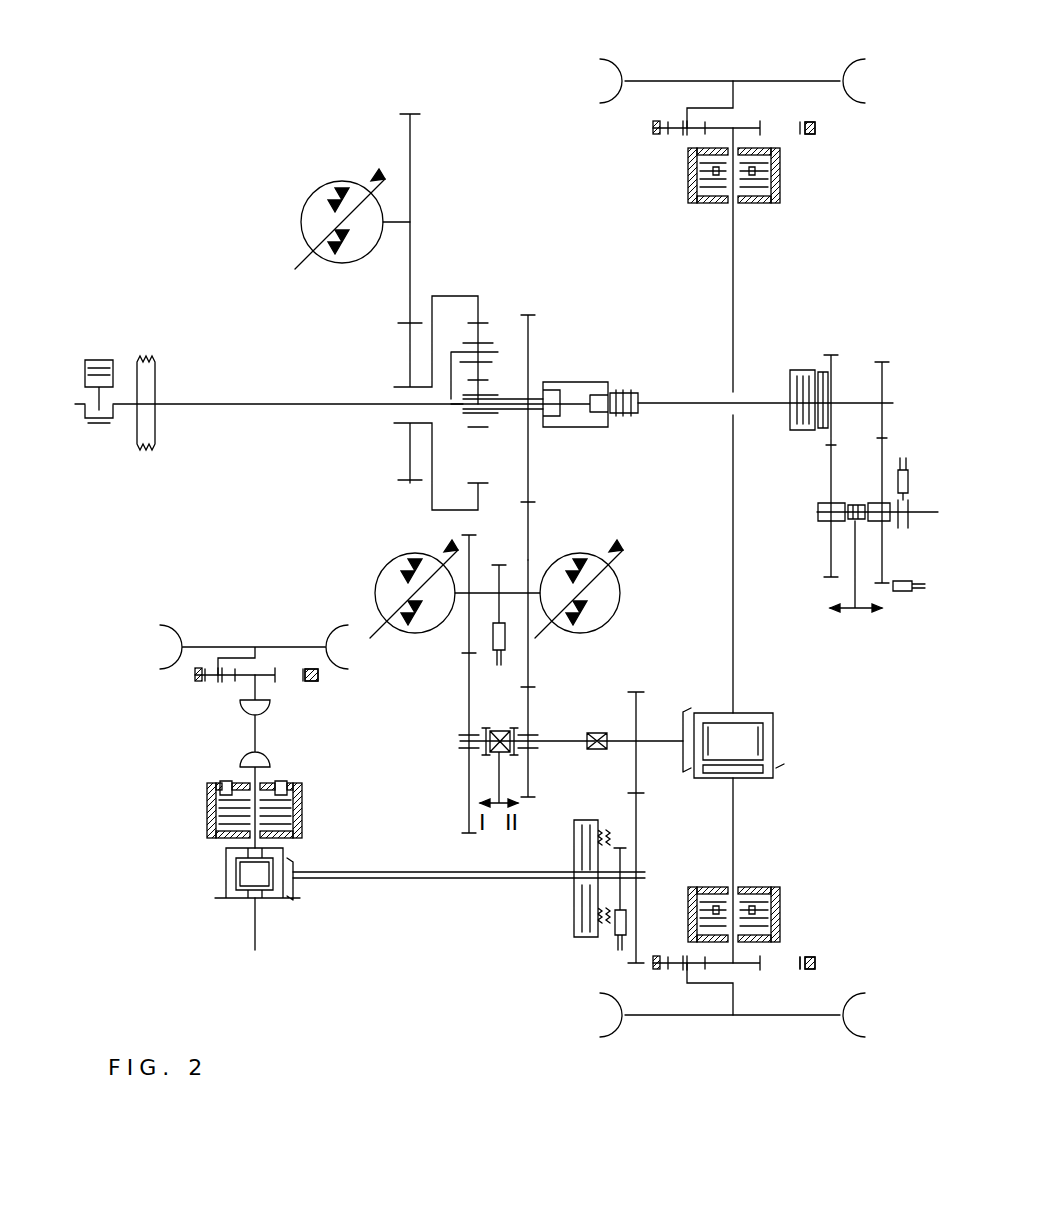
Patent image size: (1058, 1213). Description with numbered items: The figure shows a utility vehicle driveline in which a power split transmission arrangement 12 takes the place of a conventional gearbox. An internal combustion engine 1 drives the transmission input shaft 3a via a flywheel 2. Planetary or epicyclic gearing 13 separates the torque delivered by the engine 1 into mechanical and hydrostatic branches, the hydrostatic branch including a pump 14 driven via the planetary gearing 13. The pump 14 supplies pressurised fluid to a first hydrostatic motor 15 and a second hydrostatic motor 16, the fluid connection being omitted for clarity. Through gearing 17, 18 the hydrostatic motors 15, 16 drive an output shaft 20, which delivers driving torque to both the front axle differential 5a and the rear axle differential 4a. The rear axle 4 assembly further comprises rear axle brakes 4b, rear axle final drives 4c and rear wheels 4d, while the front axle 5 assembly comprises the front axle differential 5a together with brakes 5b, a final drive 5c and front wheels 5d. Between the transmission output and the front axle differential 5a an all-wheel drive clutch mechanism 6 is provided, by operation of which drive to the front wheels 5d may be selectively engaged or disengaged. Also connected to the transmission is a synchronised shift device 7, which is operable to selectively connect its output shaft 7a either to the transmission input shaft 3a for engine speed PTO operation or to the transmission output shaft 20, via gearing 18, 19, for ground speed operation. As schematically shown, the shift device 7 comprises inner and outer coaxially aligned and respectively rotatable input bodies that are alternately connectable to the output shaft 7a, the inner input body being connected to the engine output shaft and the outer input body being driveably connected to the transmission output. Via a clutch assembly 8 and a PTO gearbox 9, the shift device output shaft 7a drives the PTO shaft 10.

The internal combustion engine 1 is at (97, 358).
The flywheel 2 is at (150, 364).
The input shaft 3a is at (256, 401).
The rear axle 4 is at (738, 320).
The rear axle differential 4a is at (776, 722).
The rear axle brakes 4b is at (706, 206).
The rear axle final drives 4c is at (792, 958).
The rear wheels 4d is at (684, 80).
The front axle 5 is at (250, 774).
The front axle differential 5a is at (272, 906).
The front axle brakes 5b is at (292, 784).
The front axle final drive 5c is at (212, 690).
The front wheels 5d is at (268, 642).
The all-wheel drive clutch mechanism 6 is at (568, 905).
The synchronised shift device 7 is at (584, 380).
The output shaft of the synchronised shift device 7a is at (690, 406).
The clutch assembly 8 is at (796, 432).
The PTO gearbox 9 is at (860, 360).
The PTO shaft 10 is at (916, 500).
The power split transmission arrangement 12 is at (512, 133).
The planetary gearing 13 is at (478, 294).
The pump 14 is at (320, 195).
The first hydrostatic motor 15 is at (390, 565).
The second hydrostatic motor 16 is at (622, 585).
The gearing 17 is at (465, 666).
The gearing 18 is at (536, 676).
The gearing 19 is at (530, 490).
The output shaft 20 is at (584, 752).